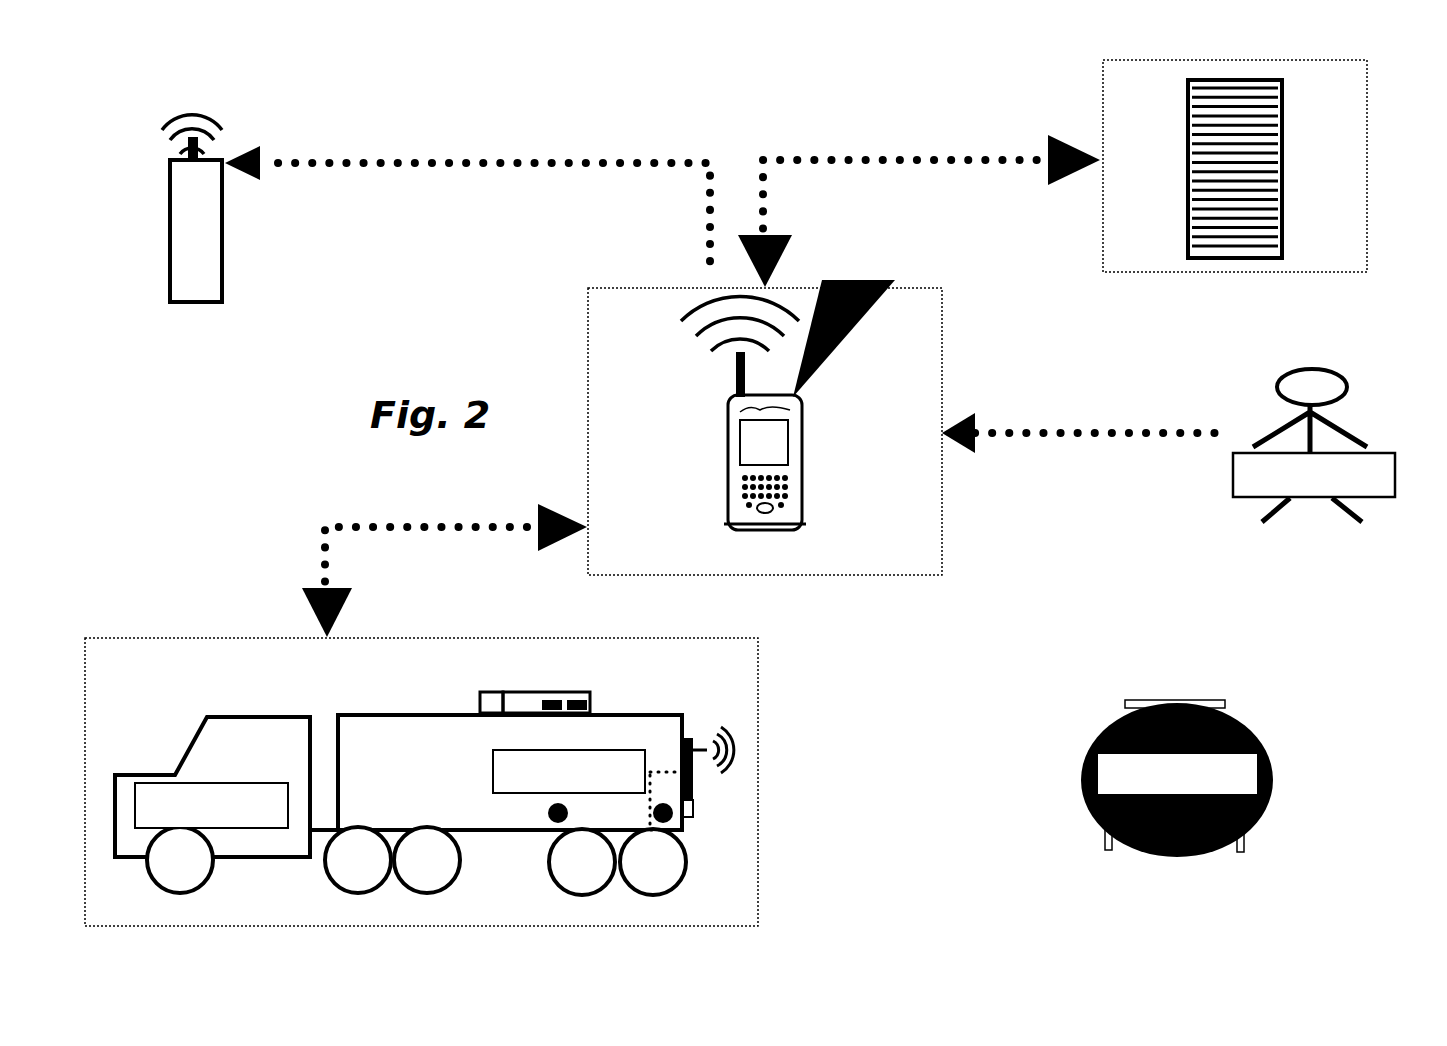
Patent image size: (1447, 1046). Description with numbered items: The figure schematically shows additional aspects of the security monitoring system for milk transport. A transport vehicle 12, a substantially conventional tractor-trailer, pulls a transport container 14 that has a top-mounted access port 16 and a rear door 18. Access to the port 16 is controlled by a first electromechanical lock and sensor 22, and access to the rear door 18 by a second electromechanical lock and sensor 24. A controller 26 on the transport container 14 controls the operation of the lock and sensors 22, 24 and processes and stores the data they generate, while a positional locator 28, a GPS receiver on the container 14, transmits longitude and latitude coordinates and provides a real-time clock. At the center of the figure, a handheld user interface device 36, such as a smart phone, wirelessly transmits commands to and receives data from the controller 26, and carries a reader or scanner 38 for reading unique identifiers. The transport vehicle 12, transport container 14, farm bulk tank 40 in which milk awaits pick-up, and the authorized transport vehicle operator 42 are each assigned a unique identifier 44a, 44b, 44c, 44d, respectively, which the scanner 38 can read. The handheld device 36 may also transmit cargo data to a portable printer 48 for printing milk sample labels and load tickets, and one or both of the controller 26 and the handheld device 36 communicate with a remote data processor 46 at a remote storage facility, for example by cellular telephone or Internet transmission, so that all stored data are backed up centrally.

The transport vehicle 12 is at (240, 717).
The transport container 14 is at (382, 712).
The top-mounted access port 16 is at (528, 692).
The rear door 18 is at (685, 722).
The first electromechanical lock and sensor 22 is at (587, 700).
The second electromechanical lock and sensor 24 is at (693, 805).
The controller 26 is at (693, 783).
The positional locator 28 is at (487, 692).
The handheld user interface device 36 is at (800, 483).
The reader or scanner 38 is at (798, 395).
The bulk tank 40 is at (1223, 713).
The transport vehicle operator 42 is at (1350, 383).
The unique identifier 44a is at (211, 805).
The unique identifier 44b is at (569, 771).
The unique identifier 44c is at (1177, 774).
The unique identifier 44d is at (1314, 475).
The remote data processor 46 is at (1227, 260).
The portable printer 48 is at (215, 235).